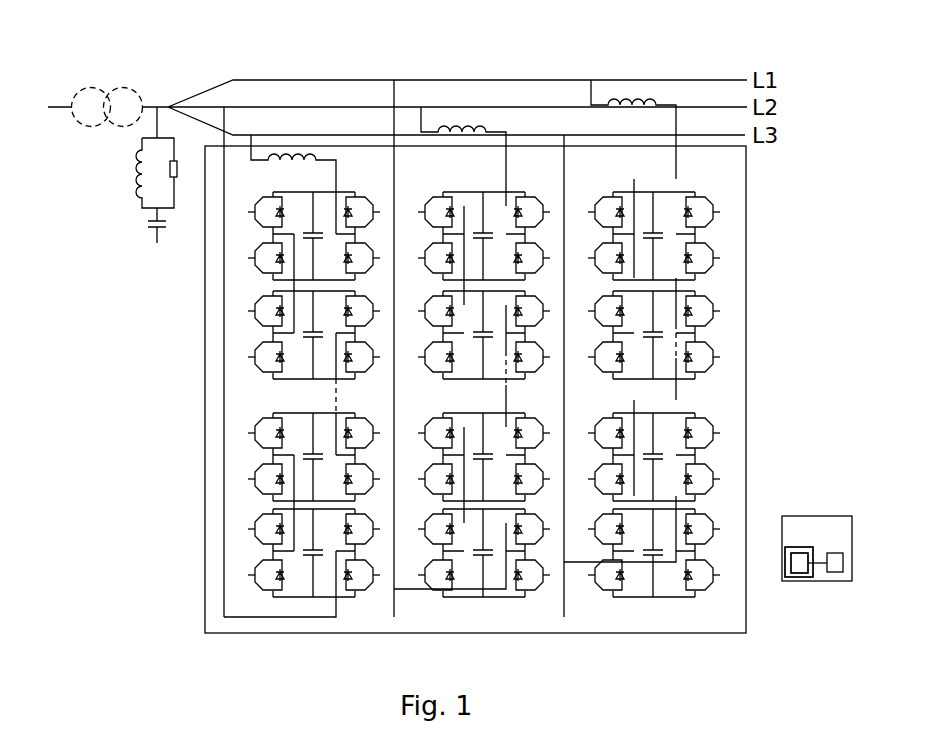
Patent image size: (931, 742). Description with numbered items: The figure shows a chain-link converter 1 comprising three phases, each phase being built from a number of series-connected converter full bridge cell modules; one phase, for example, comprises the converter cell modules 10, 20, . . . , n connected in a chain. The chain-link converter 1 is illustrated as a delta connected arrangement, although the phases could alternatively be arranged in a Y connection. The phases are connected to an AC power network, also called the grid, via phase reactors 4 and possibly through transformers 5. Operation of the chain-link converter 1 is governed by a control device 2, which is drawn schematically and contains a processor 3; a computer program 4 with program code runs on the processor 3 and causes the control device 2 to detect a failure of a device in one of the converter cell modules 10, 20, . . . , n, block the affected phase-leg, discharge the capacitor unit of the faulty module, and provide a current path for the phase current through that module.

The chain-link converter 1 is at (464, 356).
The control device 2 is at (822, 533).
The processor 3 is at (837, 569).
The computer program 4 is at (798, 567).
The transformer 5 is at (108, 90).
The converter cell module 10 is at (254, 236).
The converter cell module 20 is at (254, 334).
The converter cell module n is at (254, 553).